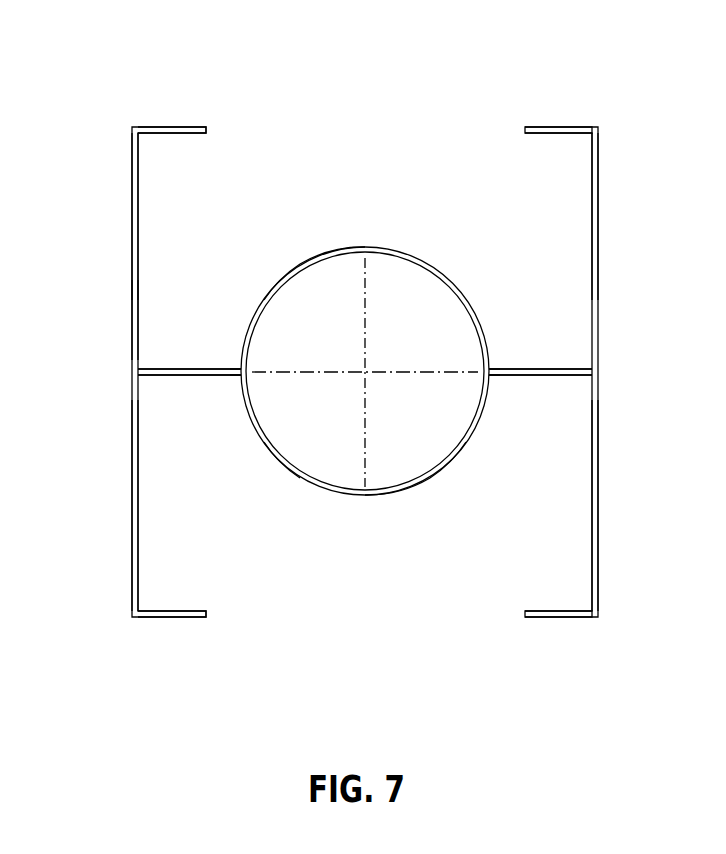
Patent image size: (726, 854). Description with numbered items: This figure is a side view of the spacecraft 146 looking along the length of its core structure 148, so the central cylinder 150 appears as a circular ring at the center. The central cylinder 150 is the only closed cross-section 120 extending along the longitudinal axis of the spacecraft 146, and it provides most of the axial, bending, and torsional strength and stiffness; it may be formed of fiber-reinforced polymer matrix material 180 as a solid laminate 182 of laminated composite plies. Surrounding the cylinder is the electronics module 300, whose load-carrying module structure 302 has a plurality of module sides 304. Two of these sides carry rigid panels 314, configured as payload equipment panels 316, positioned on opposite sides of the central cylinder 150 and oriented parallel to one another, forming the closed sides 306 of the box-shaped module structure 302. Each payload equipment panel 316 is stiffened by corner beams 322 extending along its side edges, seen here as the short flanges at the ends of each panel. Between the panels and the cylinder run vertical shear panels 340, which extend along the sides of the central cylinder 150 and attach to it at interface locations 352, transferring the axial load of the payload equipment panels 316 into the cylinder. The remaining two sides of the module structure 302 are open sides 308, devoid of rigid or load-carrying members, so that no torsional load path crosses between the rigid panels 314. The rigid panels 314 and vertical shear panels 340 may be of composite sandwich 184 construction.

The open side 308 is at (358, 83).
The electronics module 300 is at (133, 126).
The spacecraft 146 is at (598, 128).
The corner beam 322 is at (178, 127).
The module structure 302 is at (132, 178).
The module side 304 is at (132, 250).
The closed side 306 is at (132, 312).
The payload equipment panel 316 is at (132, 458).
The rigid panel 314 is at (132, 523).
The vertical shear panel 340 is at (185, 368).
The interface location 352 is at (240, 380).
The closed cross-section 120 is at (440, 274).
The central cylinder 150 is at (318, 256).
The core structure 148 is at (282, 280).
The fiber-reinforced polymer matrix material 180 is at (277, 452).
The solid laminate 182 is at (398, 494).
The composite sandwich 184 is at (462, 447).